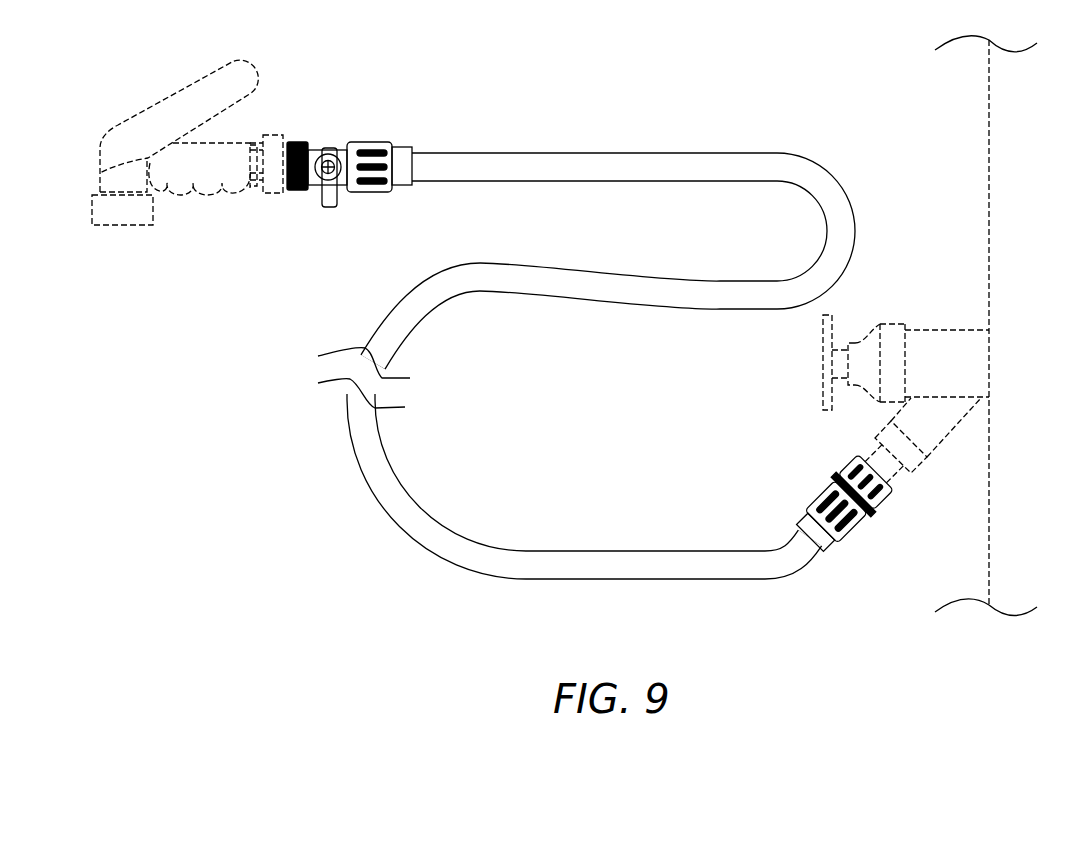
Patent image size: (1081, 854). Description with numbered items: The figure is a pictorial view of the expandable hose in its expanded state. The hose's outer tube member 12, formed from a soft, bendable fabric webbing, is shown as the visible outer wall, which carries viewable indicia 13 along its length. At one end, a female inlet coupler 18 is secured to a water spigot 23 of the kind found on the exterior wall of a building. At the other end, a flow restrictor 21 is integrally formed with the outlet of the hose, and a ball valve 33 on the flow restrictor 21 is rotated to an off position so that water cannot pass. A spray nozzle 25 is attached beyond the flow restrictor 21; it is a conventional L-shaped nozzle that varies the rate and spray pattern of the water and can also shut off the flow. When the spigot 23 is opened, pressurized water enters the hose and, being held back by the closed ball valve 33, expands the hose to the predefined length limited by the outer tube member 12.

The outer tube member 12 is at (448, 150).
The viewable indicia 13 is at (617, 158).
The female inlet coupler 18 is at (816, 487).
The flow restrictor 21 is at (302, 142).
The water spigot 23 is at (980, 365).
The spray nozzle 25 is at (162, 115).
The ball valve 33 is at (327, 208).